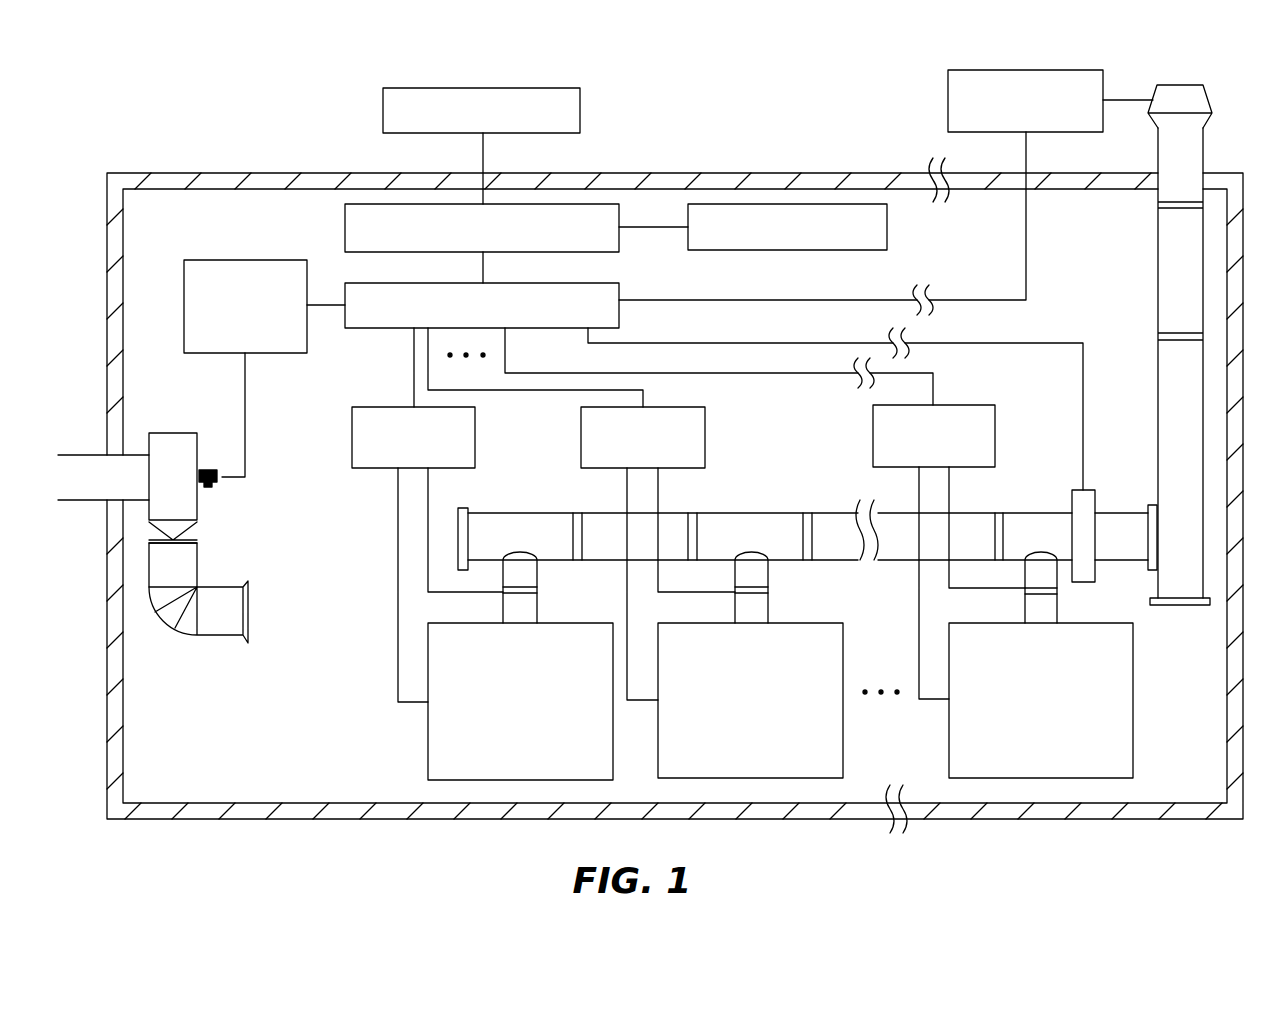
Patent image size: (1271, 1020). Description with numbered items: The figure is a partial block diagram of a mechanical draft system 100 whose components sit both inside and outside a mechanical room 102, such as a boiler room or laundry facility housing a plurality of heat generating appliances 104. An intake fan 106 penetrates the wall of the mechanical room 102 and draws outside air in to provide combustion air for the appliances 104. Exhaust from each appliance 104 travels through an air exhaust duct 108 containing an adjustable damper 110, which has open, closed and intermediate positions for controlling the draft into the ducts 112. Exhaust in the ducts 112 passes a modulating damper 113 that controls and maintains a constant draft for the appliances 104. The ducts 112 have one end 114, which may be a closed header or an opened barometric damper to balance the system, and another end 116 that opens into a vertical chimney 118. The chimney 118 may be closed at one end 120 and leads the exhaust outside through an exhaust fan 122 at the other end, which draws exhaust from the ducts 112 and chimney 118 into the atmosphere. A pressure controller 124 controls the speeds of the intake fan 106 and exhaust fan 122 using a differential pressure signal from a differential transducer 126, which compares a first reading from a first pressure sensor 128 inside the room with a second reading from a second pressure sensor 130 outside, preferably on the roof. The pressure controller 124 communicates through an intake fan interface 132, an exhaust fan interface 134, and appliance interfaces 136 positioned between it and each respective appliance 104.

The mechanical draft system 100 is at (97, 146).
The mechanical room 102 is at (245, 820).
The appliances 104 is at (428, 737).
The intake fan 106 is at (160, 433).
The air exhaust duct 108 is at (537, 612).
The damper 110 is at (537, 588).
The ducts 112 is at (775, 512).
The modulating damper 113 is at (1072, 500).
The end 114 is at (463, 507).
The end 116 is at (1148, 505).
The chimney 118 is at (1158, 255).
The end 120 is at (1150, 601).
The exhaust fan 122 is at (1212, 105).
The pressure controller 124 is at (390, 328).
The differential transducer 126 is at (345, 224).
The first pressure sensor 128 is at (782, 250).
The second pressure sensor 130 is at (383, 110).
The intake fan interface 132 is at (222, 260).
The exhaust fan interface 134 is at (948, 118).
The appliance interfaces 136 is at (352, 445).